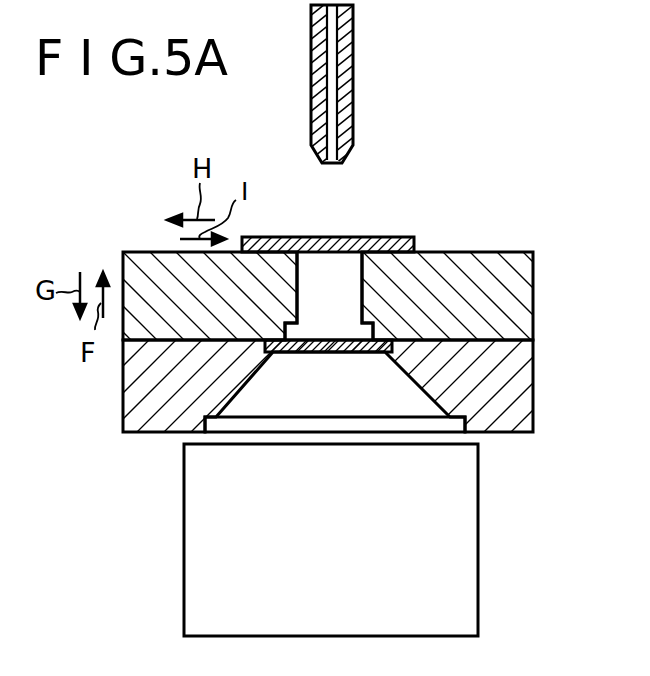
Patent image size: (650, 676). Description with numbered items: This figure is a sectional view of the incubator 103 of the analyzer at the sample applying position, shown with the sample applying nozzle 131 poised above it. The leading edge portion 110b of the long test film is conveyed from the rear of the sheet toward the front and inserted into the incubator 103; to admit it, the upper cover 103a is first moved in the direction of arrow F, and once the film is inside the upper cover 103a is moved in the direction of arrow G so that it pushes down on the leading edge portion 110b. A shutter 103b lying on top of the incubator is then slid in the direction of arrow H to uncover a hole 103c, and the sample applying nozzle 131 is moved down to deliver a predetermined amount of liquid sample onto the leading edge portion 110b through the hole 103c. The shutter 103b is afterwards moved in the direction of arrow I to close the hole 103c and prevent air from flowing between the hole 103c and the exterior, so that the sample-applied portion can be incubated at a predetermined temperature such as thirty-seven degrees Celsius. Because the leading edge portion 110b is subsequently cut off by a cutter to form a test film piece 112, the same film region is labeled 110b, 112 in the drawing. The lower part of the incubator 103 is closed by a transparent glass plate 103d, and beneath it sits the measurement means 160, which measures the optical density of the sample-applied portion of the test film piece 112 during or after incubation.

The sample applying nozzle 131 is at (353, 100).
The incubator 103 is at (336, 334).
The upper cover 103a is at (503, 270).
The shutter 103b is at (400, 247).
The hole 103c is at (321, 278).
The transparent glass plate 103d is at (462, 424).
The leading edge portion 110b is at (325, 373).
The test film piece 112 is at (322, 356).
The measurement means 160 is at (460, 516).